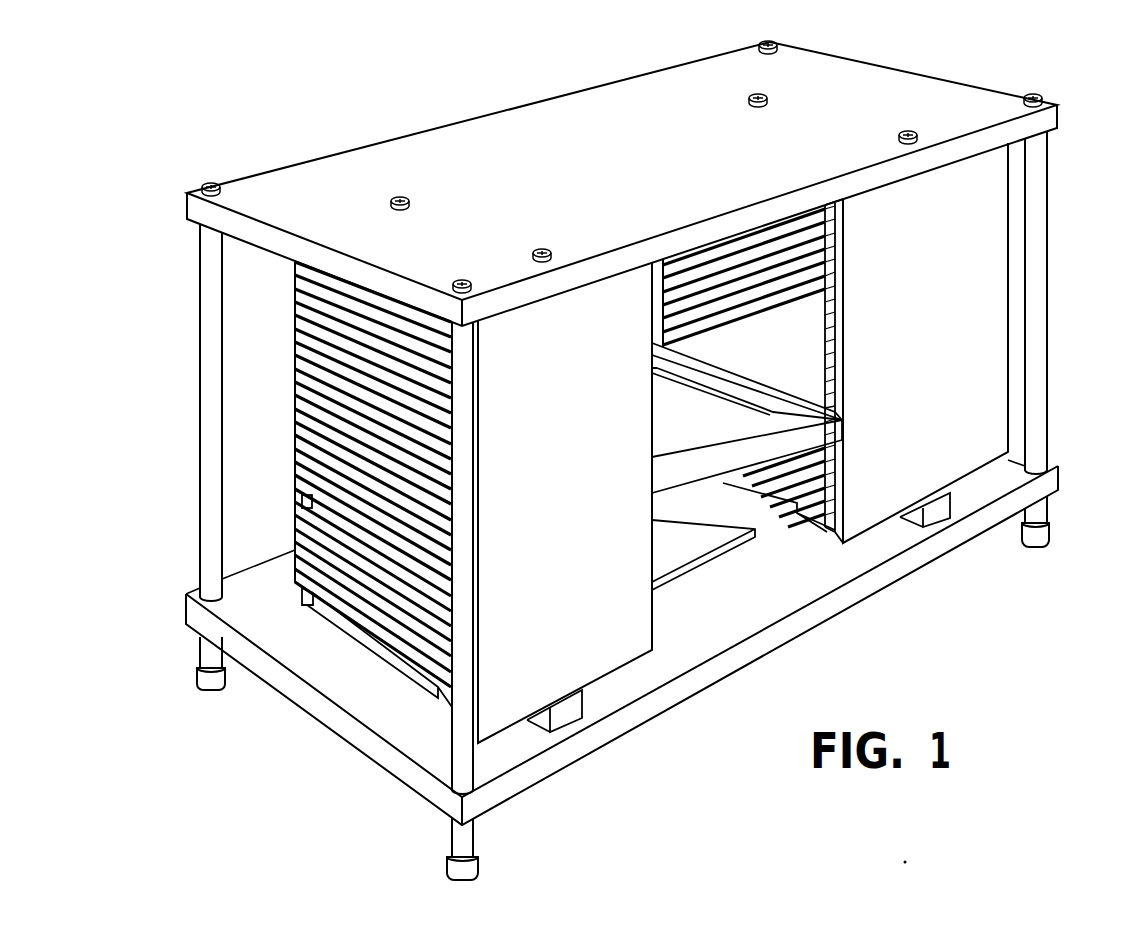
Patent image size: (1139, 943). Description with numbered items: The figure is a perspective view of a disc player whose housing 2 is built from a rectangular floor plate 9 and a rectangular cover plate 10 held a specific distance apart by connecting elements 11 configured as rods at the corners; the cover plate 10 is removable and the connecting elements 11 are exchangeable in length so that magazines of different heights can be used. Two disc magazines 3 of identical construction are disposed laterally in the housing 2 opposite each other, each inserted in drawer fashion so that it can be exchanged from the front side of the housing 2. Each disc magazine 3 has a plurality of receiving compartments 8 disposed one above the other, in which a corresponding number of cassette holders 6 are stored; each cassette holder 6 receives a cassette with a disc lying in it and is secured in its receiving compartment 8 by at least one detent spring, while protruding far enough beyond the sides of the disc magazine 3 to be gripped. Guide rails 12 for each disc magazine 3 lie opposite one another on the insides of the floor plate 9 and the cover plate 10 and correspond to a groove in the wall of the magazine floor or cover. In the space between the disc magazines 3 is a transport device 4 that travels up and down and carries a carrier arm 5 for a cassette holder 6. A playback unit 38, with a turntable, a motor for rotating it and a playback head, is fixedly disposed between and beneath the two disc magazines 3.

The housing 2 is at (306, 134).
The disc magazine 3 is at (628, 640).
The transport device 4 is at (674, 400).
The carrier arm 5 is at (722, 480).
The cassette holder 6 is at (297, 356).
The receiving compartment 8 is at (300, 498).
The floor plate 9 is at (719, 662).
The cover plate 10 is at (1062, 107).
The connecting element 11 is at (205, 366).
The guide rail 12 is at (567, 718).
The playback unit 38 is at (695, 558).